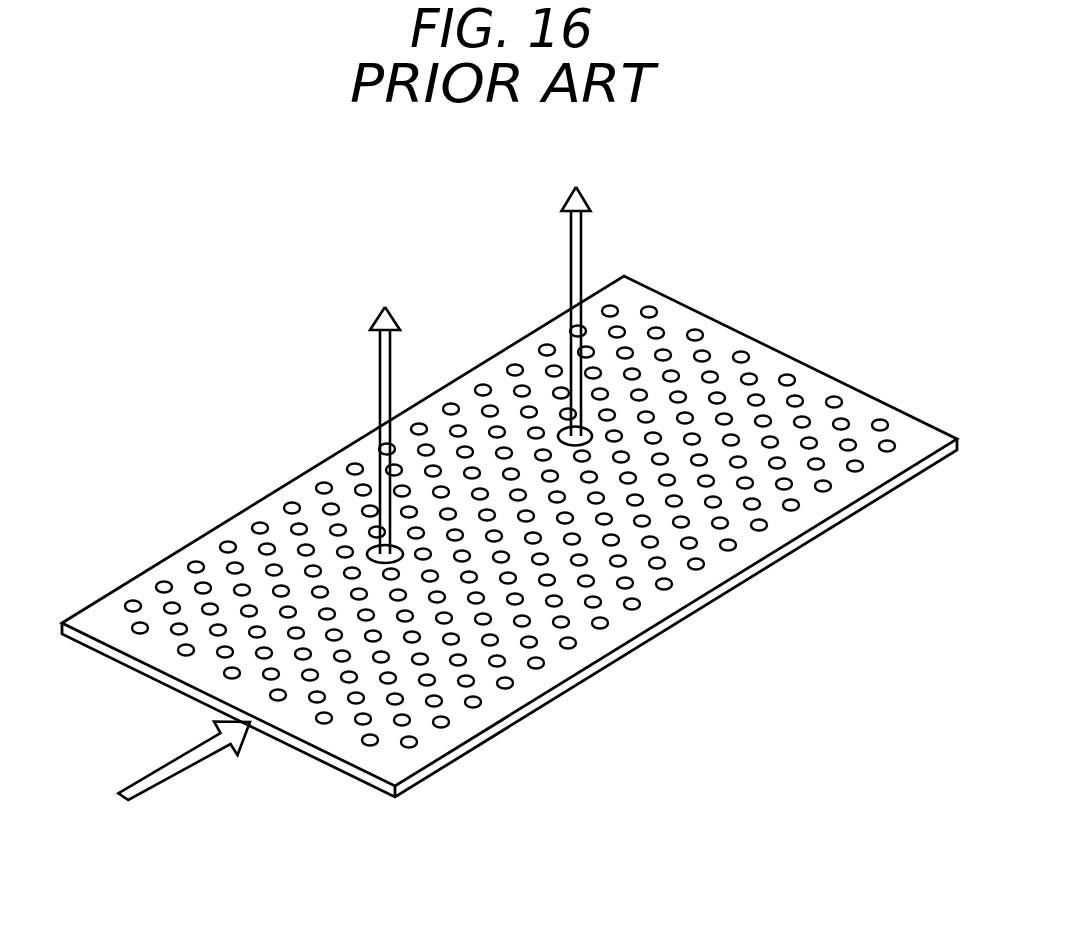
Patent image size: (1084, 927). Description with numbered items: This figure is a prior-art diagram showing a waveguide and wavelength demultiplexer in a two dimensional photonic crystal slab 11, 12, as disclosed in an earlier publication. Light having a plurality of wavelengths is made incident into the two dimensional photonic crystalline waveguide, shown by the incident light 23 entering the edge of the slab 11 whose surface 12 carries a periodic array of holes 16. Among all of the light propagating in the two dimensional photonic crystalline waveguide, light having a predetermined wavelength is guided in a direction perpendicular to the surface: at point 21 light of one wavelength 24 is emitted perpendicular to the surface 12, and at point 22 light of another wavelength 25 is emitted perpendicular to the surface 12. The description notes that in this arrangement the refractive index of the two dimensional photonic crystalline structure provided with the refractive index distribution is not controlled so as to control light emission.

The slab 11 is at (690, 610).
The photonic crystal 12 is at (762, 395).
The hole 16 is at (418, 742).
The point defect 21 is at (366, 548).
The point defect 22 is at (564, 435).
The incident light 23 is at (156, 771).
The emitted light of wavelength λi 24 is at (392, 378).
The emitted light of wavelength λj 25 is at (582, 248).